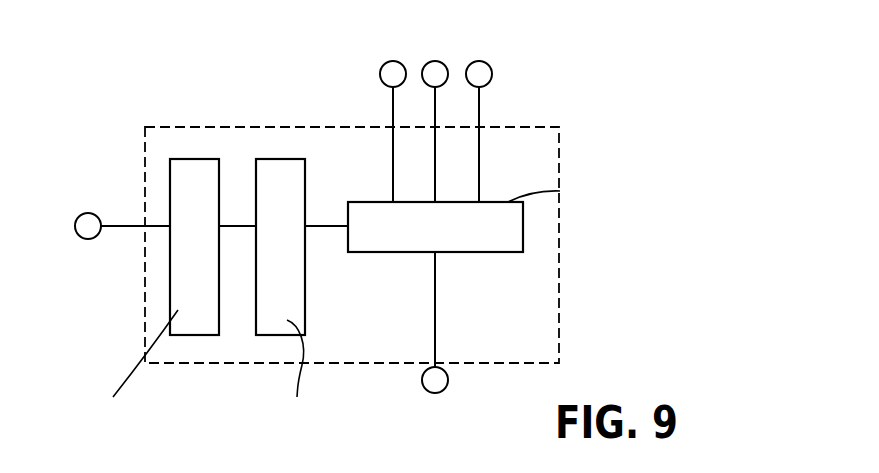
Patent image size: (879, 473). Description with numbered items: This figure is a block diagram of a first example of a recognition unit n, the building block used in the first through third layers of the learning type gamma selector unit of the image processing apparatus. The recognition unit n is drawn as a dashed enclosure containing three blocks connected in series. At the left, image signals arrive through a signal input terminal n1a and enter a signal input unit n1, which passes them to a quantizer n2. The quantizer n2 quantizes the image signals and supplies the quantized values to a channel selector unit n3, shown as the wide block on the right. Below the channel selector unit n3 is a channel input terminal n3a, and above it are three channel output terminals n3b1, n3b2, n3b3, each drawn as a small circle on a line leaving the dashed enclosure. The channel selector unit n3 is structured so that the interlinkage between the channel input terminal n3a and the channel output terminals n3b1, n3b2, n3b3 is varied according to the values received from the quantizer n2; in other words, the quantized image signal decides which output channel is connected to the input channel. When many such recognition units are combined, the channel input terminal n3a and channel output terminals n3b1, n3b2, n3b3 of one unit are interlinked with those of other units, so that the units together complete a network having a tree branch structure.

The recognition unit n is at (560, 247).
The signal input unit n1 is at (188, 335).
The signal input terminal n1a is at (77, 220).
The quantizer n2 is at (276, 336).
The channel selector unit n3 is at (487, 201).
The channel input terminal n3a is at (445, 386).
The channel output terminal n3b1 is at (380, 73).
The channel output terminal n3b2 is at (446, 63).
The channel output terminal n3b3 is at (490, 82).